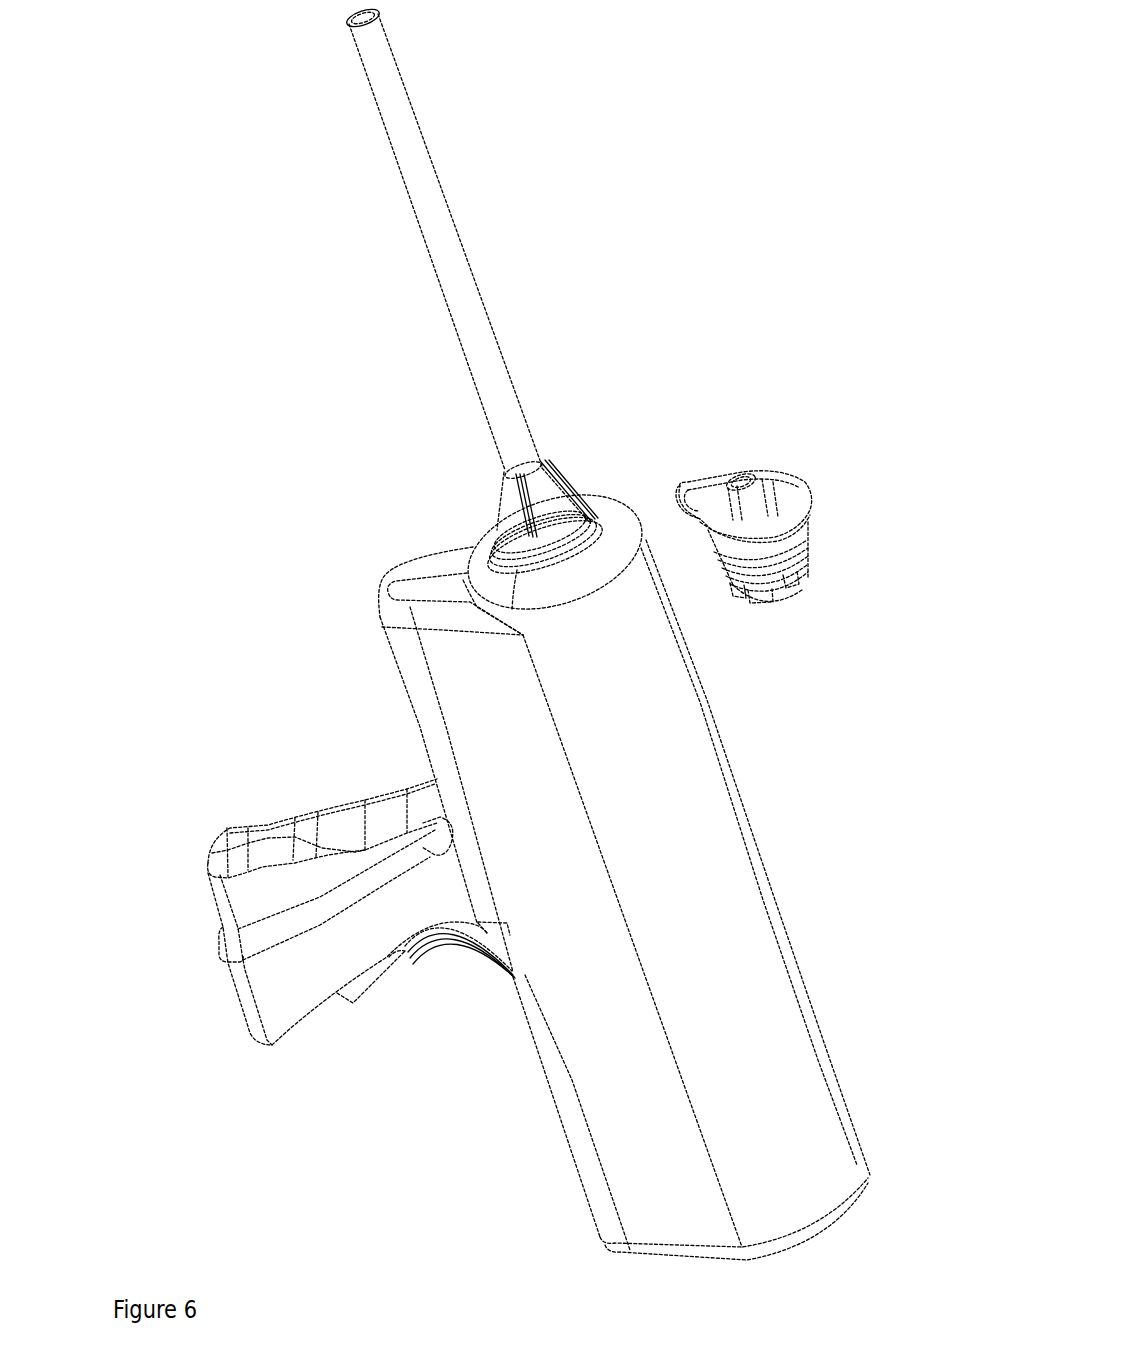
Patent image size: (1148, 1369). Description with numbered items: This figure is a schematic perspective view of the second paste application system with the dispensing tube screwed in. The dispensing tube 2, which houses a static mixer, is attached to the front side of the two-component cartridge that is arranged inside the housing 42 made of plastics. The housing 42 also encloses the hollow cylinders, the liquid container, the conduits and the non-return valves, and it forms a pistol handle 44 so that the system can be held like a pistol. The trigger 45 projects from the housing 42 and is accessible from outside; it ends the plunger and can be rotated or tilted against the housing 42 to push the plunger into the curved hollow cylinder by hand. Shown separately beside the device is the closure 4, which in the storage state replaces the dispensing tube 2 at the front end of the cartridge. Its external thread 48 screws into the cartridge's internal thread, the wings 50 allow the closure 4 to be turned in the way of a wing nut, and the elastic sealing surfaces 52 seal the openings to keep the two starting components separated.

The dispensing tube 2 is at (389, 62).
The closure 4 is at (701, 420).
The housing 42 is at (423, 590).
The pistol handle 44 is at (283, 962).
The trigger 45 is at (322, 830).
The external thread 48 is at (785, 557).
The wings 50 is at (798, 493).
The sealing surfaces 52 is at (798, 577).